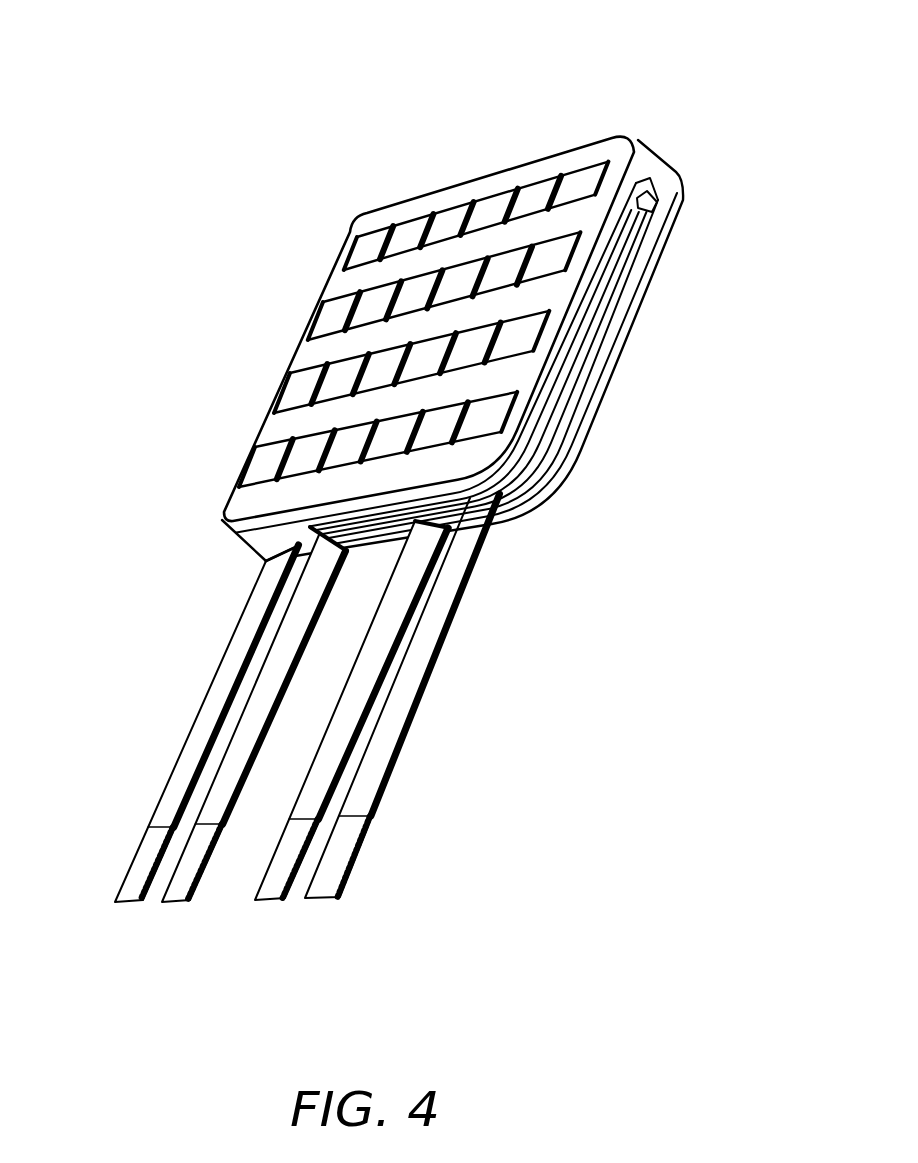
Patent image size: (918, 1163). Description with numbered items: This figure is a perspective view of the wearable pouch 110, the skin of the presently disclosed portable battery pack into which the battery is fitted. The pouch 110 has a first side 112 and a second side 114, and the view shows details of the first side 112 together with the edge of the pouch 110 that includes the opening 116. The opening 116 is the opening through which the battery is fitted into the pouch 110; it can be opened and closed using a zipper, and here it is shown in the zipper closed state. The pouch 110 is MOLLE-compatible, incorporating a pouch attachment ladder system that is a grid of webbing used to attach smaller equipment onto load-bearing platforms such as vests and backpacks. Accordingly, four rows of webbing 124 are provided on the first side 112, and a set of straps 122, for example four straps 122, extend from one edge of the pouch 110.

The pouch 110 is at (254, 79).
The first side 112 is at (290, 358).
The second side 114 is at (588, 418).
The opening 116 is at (624, 266).
The straps 122 is at (245, 707).
The rows of webbing 124 is at (355, 239).